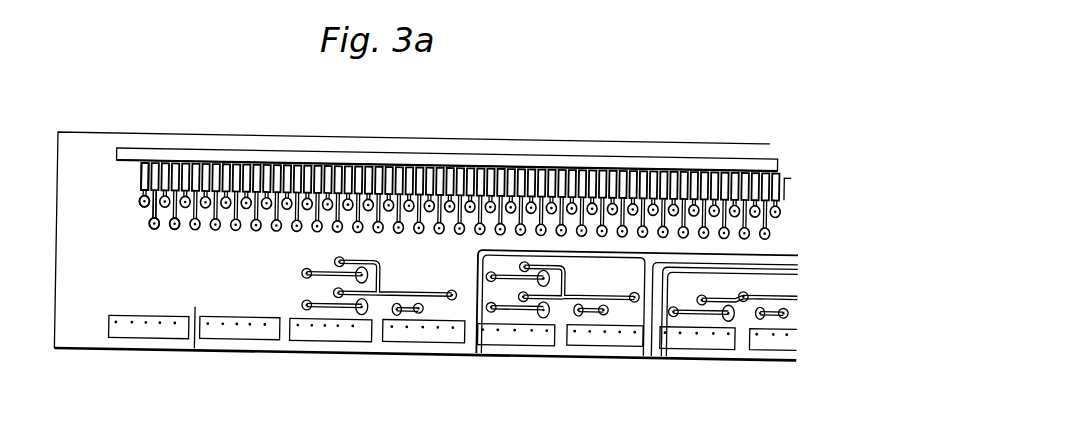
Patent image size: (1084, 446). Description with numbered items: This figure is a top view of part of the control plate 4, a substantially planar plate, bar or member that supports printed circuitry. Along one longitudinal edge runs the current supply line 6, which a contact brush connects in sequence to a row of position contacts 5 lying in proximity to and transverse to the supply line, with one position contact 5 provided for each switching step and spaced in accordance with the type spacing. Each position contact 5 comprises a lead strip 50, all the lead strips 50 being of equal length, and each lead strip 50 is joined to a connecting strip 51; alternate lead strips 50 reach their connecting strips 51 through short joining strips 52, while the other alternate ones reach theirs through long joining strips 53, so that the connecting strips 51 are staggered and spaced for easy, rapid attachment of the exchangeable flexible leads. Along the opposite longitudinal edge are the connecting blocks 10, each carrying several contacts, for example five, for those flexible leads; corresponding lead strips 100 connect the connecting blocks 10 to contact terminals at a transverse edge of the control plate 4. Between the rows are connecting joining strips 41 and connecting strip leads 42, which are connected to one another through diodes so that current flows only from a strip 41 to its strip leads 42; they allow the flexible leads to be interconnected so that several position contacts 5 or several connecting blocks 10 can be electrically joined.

The current supply line 6 is at (200, 152).
The lead strip 50 is at (139, 170).
The short joining strip 52 is at (138, 198).
The long joining strip 53 is at (151, 209).
The connecting strip 51 is at (175, 231).
The position contact 5 is at (124, 187).
The lead strip 100 is at (681, 252).
The connecting joining strip 41 is at (382, 275).
The connecting strip lead 42 is at (305, 305).
The connecting block 10 is at (138, 330).
The control plate 4 is at (195, 310).